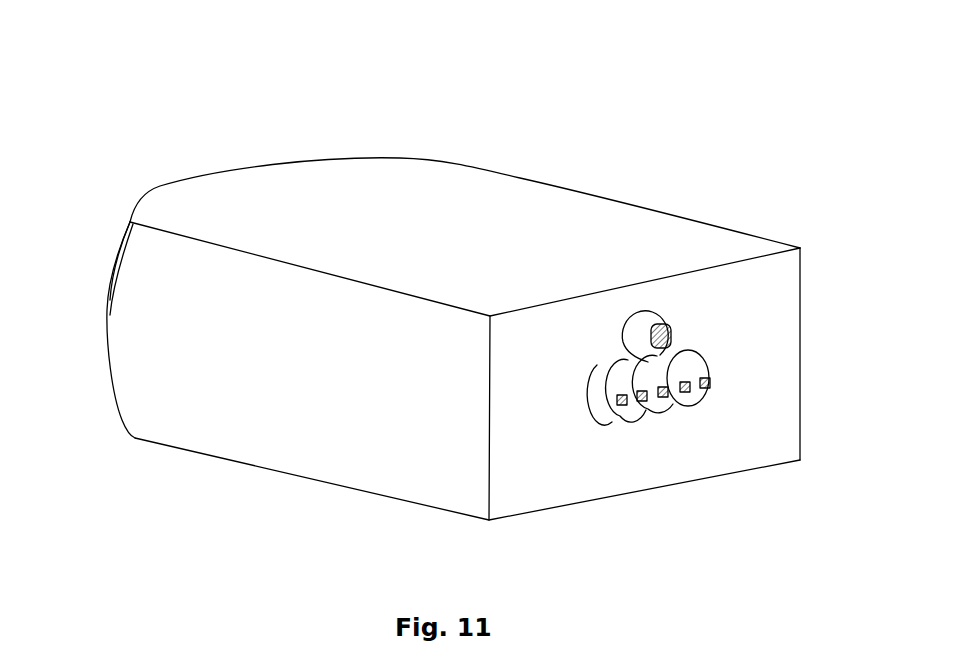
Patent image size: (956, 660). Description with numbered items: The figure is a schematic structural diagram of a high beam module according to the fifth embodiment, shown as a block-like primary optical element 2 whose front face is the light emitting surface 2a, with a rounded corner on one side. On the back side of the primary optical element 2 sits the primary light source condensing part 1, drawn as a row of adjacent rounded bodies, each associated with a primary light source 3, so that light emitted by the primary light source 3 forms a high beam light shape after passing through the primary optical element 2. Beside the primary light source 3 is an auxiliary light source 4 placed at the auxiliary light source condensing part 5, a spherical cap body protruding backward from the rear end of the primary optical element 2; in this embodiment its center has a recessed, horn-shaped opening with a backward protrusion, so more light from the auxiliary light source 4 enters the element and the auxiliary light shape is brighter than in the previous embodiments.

The primary light source condensing part 1 is at (590, 410).
The primary optical element 2 is at (520, 200).
The light emitting surface 2a is at (130, 232).
The primary light source 3 is at (627, 413).
The auxiliary light source 4 is at (673, 330).
The auxiliary light source condensing part 5 is at (638, 335).